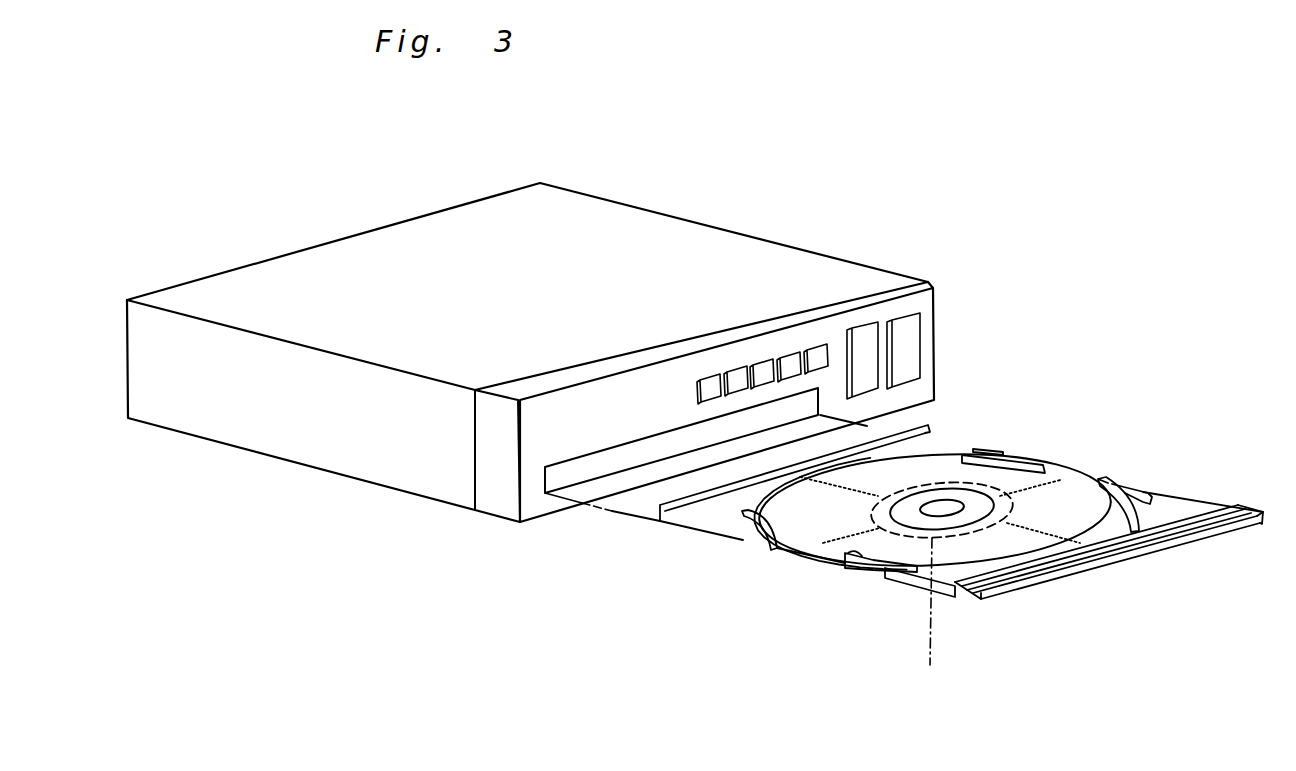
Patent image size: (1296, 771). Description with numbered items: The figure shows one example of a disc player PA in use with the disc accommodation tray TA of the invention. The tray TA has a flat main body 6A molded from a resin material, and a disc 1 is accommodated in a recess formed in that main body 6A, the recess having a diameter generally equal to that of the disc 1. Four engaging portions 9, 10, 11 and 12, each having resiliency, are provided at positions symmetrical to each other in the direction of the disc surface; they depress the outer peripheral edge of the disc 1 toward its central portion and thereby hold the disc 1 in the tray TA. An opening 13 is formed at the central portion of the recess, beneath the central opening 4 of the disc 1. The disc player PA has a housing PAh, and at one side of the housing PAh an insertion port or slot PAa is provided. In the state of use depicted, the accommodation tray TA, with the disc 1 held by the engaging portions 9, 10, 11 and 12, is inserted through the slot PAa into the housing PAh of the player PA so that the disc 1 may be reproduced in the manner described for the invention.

The disc player PA is at (530, 386).
The housing PAh is at (261, 437).
The insertion port or slot PAa is at (597, 467).
The disc accommodation tray TA is at (915, 511).
The disc 1 is at (1067, 498).
The central opening 4 is at (942, 503).
The flat main body 6A is at (1177, 507).
The engaging portion 9 is at (1117, 490).
The engaging portion 10 is at (1023, 455).
The engaging portion 11 is at (853, 570).
The engaging portion 12 is at (752, 548).
The opening 13 is at (930, 619).